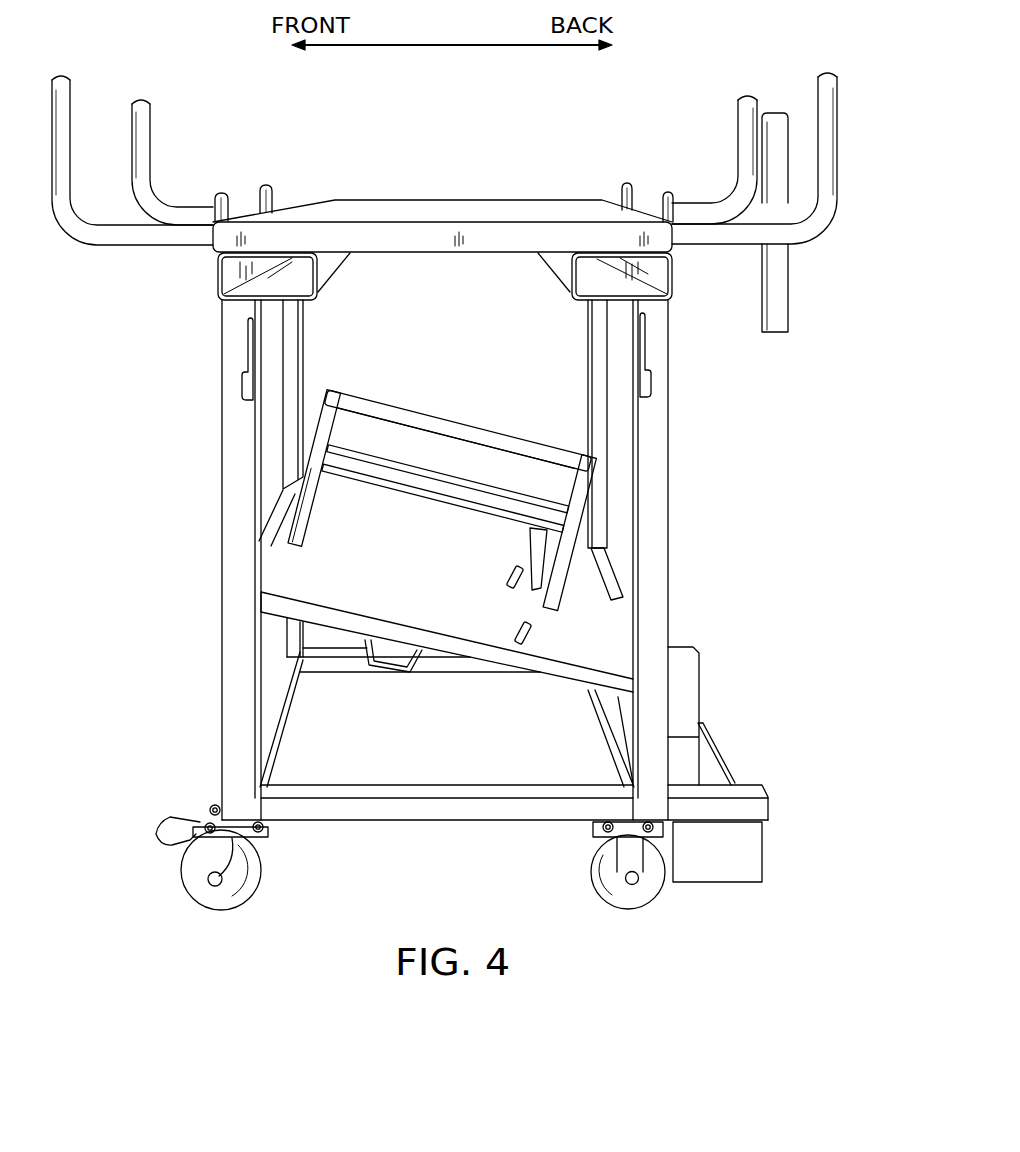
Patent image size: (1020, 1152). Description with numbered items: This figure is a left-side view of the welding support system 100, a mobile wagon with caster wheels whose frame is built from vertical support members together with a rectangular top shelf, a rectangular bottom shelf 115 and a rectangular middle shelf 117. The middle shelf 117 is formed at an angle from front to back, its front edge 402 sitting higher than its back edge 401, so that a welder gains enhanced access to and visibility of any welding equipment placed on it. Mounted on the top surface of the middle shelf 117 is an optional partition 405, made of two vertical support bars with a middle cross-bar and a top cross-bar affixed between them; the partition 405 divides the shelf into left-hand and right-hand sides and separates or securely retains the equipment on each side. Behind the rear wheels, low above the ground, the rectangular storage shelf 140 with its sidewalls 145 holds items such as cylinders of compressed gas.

The welding support system 100 is at (655, 135).
The bottom shelf 115 is at (450, 741).
The middle shelf 117 is at (443, 581).
The storage shelf 140 is at (702, 768).
The sidewalls 145 is at (743, 862).
The back edge 401 is at (614, 592).
The front edge 402 is at (277, 514).
The partition 405 is at (446, 474).